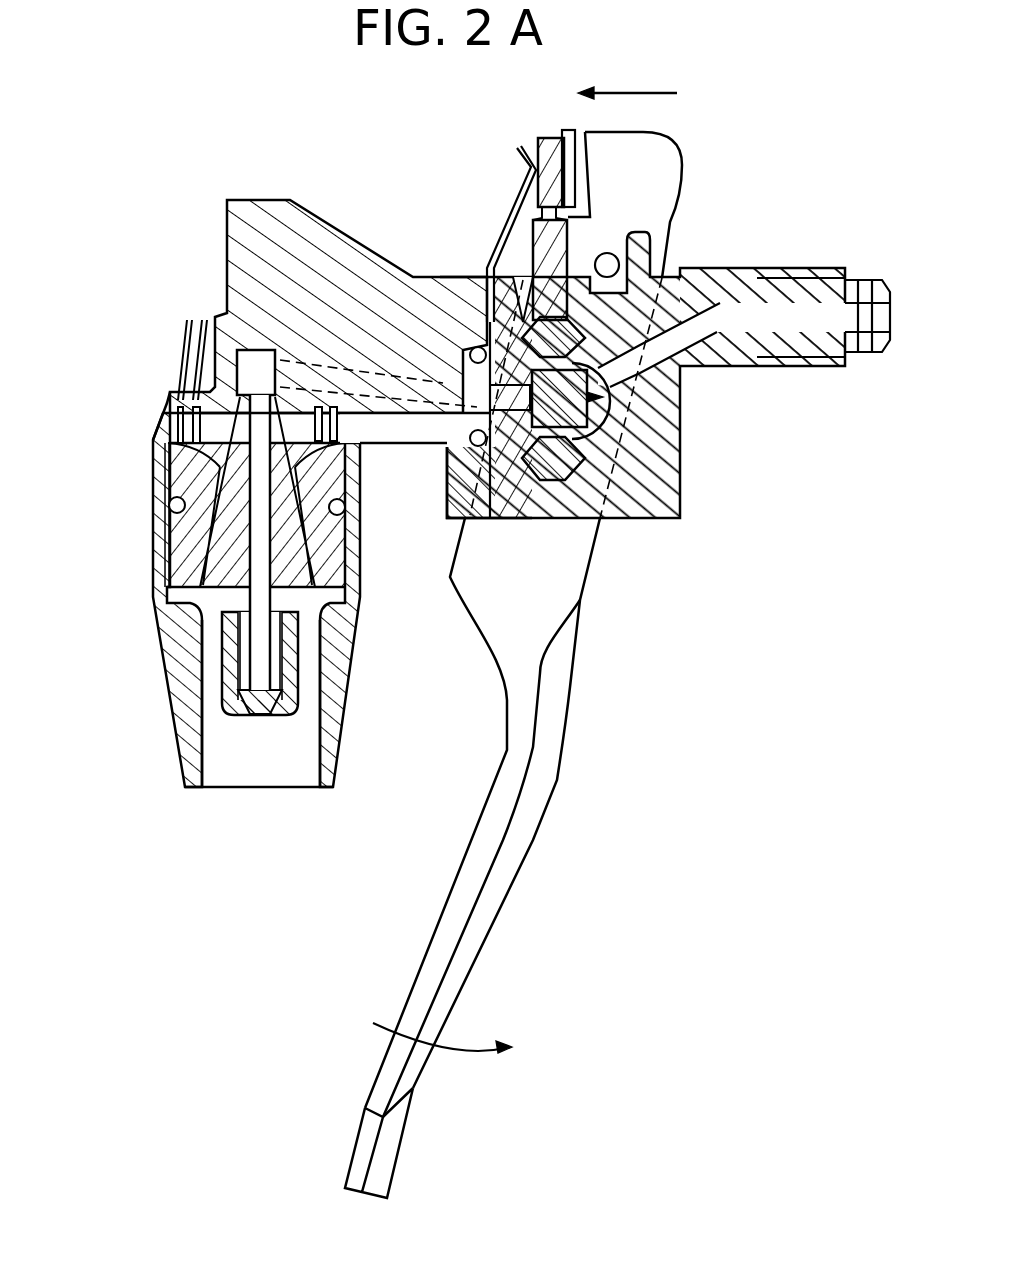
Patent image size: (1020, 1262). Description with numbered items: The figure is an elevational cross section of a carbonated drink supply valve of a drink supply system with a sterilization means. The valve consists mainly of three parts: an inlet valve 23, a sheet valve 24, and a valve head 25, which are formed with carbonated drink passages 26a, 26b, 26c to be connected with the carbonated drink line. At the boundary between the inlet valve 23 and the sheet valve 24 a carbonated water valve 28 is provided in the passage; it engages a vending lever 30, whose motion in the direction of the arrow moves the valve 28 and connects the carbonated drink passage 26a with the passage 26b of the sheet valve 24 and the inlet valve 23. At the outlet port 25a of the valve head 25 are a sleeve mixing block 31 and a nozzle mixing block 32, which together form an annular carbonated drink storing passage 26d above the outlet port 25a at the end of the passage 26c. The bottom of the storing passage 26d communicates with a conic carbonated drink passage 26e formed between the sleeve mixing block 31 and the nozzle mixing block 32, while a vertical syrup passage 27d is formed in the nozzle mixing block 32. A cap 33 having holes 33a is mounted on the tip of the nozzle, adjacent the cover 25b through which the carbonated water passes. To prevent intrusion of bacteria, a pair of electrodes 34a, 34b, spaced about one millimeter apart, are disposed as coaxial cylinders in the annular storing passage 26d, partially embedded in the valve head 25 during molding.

The inlet valve 23 is at (668, 440).
The sheet valve 24 is at (537, 512).
The valve head 25 is at (317, 235).
The outlet port 25a is at (255, 760).
The cover 25b is at (170, 663).
The carbonated drink passage 26a is at (798, 312).
The carbonated drink passage 26b is at (503, 512).
The carbonated drink passage 26c is at (410, 417).
The carbonated drink storing passage 26d is at (163, 458).
The conic carbonated drink passage 26e is at (157, 547).
The vertical syrup passage 27d is at (157, 593).
The carbonated water valve 28 is at (620, 458).
The vending lever 30 is at (573, 692).
The sleeve mixing block 31 is at (153, 493).
The nozzle mixing block 32 is at (153, 520).
The cap 33 is at (222, 690).
The holes 33a is at (283, 723).
The electrode 34a is at (178, 393).
The electrode 34b is at (170, 408).